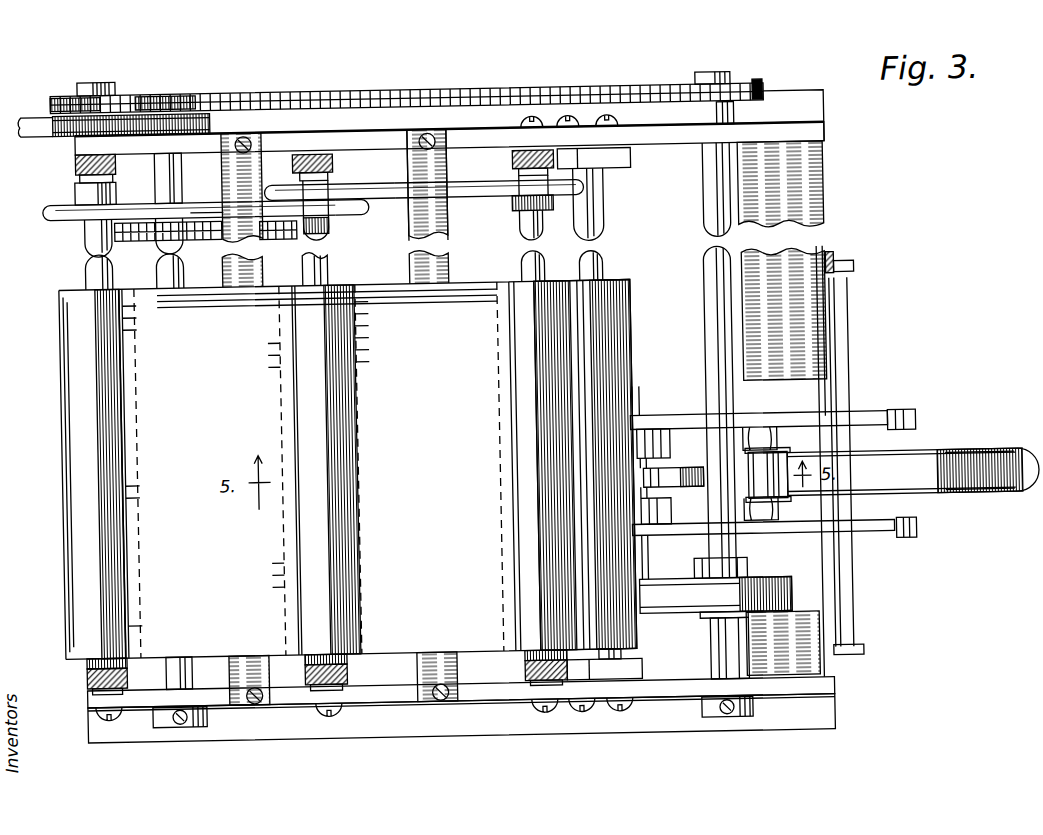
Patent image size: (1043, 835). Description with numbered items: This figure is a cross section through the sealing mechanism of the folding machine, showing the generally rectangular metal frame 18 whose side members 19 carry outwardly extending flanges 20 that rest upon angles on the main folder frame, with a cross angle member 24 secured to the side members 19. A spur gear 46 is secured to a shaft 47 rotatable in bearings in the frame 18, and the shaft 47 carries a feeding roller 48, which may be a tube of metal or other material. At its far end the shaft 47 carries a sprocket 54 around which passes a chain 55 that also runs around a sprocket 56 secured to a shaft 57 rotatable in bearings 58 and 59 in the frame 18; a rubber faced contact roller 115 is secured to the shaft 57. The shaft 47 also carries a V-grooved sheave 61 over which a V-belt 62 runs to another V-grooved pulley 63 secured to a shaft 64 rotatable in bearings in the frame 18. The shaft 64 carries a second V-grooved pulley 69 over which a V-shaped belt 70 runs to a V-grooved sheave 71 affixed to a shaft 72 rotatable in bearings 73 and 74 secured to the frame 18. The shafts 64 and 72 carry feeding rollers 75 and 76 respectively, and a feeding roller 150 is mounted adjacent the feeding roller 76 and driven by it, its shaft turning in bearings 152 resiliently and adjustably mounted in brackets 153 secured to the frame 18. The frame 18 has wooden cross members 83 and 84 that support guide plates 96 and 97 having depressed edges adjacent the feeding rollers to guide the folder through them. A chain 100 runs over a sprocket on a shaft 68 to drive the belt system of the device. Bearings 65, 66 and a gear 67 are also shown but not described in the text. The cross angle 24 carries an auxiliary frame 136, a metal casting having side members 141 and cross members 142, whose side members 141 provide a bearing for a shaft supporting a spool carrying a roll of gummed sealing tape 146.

The metal frame 18 is at (156, 141).
The side members 19 is at (818, 140).
The outwardly extending flanges 20 is at (817, 115).
The cross angle member 24 is at (825, 204).
The spur gear 46 is at (78, 128).
The shaft 47 is at (89, 231).
The feeding roller 48 is at (79, 386).
The sprocket 54 is at (77, 86).
The chain 55 is at (187, 90).
The sprocket 56 is at (760, 89).
The shaft 57 is at (711, 258).
The bearing 58 is at (742, 708).
The bearing 59 is at (746, 131).
The V-grooved sheave 61 is at (64, 213).
The V-belt 62 is at (213, 199).
The V-grooved pulley 63 is at (357, 212).
The shaft 64 is at (334, 224).
The bearing 65 is at (338, 156).
The bearing 66 is at (343, 673).
The gear 67 is at (219, 119).
The shaft 68 is at (180, 173).
The second V-grooved pulley 69 is at (363, 185).
The V-shaped belt 70 is at (475, 192).
The V-grooved sheave 71 is at (510, 199).
The shaft 72 is at (532, 223).
The bearing 73 is at (519, 166).
The bearing 74 is at (521, 673).
The feeding roller 75 is at (309, 390).
The feeding roller 76 is at (528, 379).
The cross member 83 is at (307, 99).
The cross member 84 is at (443, 168).
The guide plate 96 is at (203, 297).
The guide plate 97 is at (474, 291).
The chain 100 is at (217, 230).
The rubber faced contact roller 115 is at (780, 603).
The auxiliary frame 136 is at (960, 424).
The side members 141 is at (774, 419).
The cross members 142 is at (778, 440).
The gummed sealing tape 146 is at (977, 488).
The feeding roller 150 is at (630, 318).
The bearings 152 is at (602, 176).
The brackets 153 is at (636, 165).